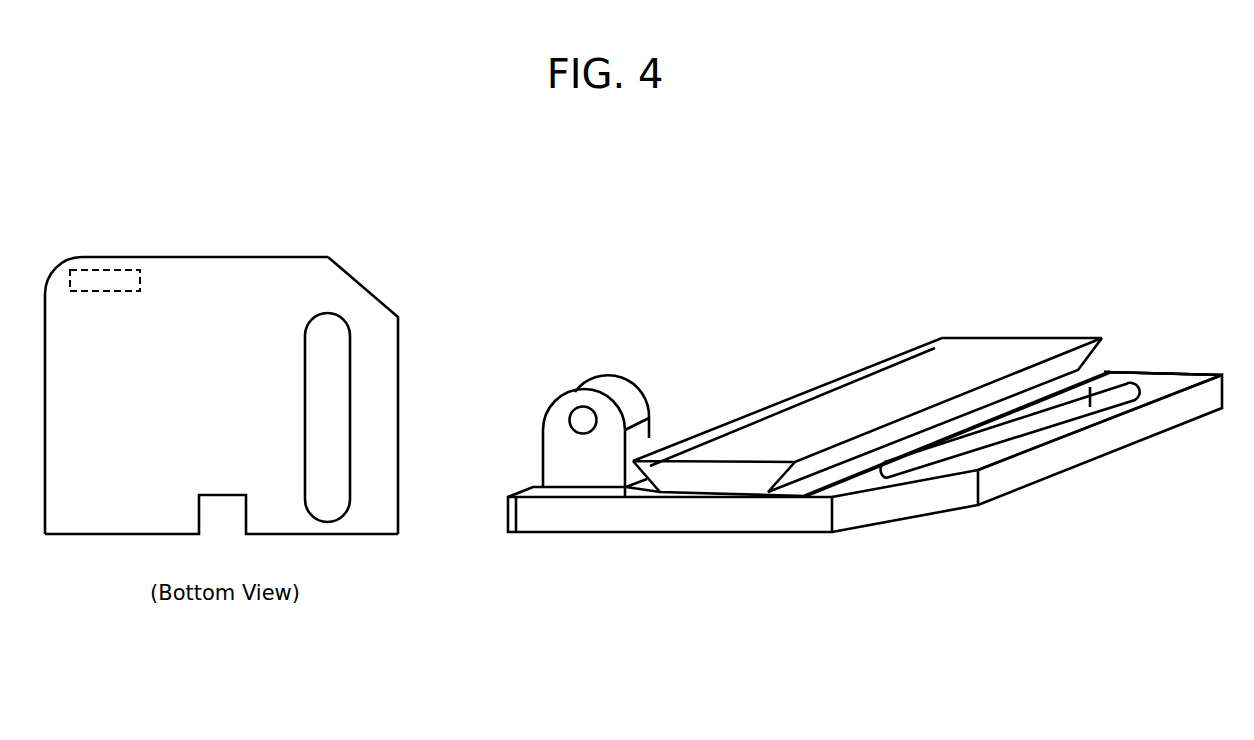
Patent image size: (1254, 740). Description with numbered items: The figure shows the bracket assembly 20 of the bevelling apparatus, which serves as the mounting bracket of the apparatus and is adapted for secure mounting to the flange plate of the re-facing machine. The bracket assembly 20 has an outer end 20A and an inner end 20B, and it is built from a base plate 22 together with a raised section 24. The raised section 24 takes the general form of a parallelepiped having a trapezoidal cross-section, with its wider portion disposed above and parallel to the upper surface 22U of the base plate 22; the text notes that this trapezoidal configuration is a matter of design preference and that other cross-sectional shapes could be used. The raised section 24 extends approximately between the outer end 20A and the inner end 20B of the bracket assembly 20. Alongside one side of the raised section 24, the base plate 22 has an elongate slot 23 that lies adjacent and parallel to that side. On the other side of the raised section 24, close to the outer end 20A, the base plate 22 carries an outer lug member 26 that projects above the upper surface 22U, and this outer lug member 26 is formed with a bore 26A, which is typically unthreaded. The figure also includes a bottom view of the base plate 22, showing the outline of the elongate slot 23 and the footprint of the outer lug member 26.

The bracket assembly 20 is at (157, 217).
The outer end 20A is at (273, 250).
The inner end 20B is at (97, 540).
The base plate 22 is at (137, 447).
The upper surface 22U is at (1138, 404).
The elongate slot 23 is at (323, 395).
The raised section 24 is at (898, 347).
The outer lug member 26 is at (117, 292).
The bore 26A is at (583, 420).